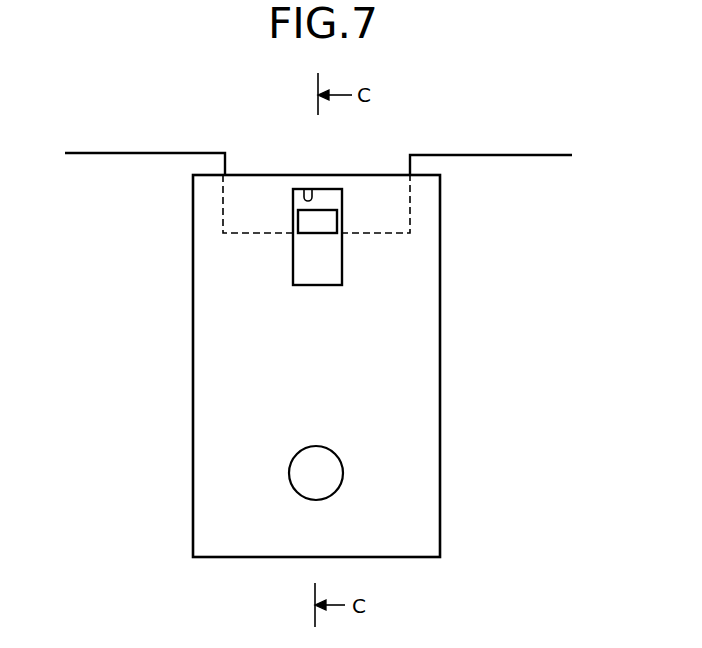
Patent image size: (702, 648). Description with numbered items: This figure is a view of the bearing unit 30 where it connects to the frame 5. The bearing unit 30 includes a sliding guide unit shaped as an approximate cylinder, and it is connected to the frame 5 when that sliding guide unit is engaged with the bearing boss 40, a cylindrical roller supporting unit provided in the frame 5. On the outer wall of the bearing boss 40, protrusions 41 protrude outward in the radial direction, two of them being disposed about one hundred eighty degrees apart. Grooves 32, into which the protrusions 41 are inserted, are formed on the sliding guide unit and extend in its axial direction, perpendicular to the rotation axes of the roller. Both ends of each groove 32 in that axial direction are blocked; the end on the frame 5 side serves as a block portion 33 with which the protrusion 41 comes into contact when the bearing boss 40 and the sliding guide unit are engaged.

The frame 5 is at (88, 153).
The bearing unit 30 is at (193, 392).
The groove 32 is at (298, 259).
The block portion 33 is at (307, 192).
The bearing boss 40 is at (223, 210).
The protrusion 41 is at (318, 210).